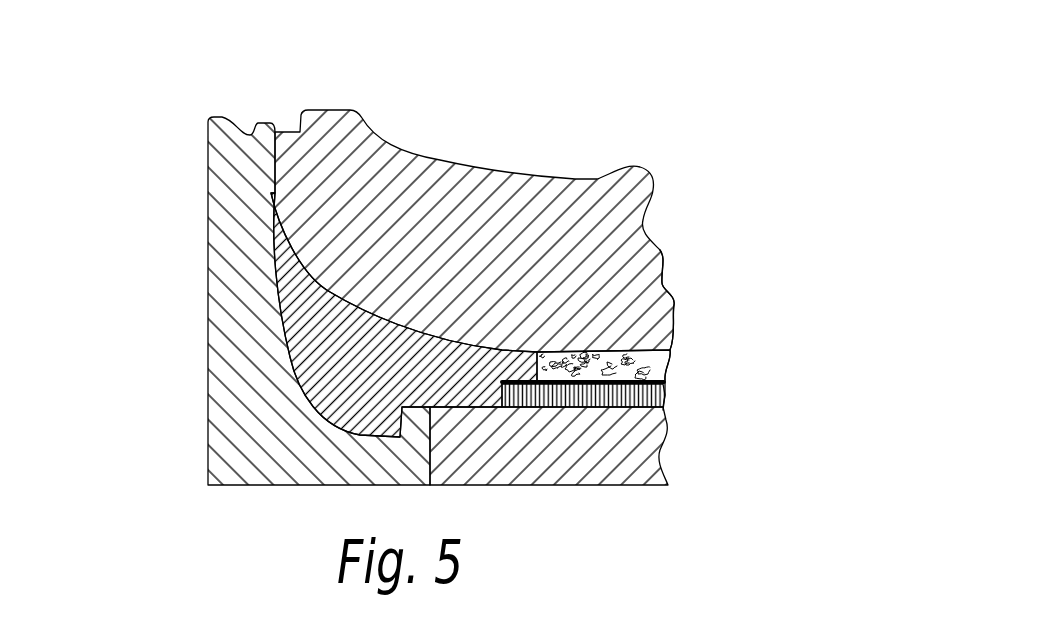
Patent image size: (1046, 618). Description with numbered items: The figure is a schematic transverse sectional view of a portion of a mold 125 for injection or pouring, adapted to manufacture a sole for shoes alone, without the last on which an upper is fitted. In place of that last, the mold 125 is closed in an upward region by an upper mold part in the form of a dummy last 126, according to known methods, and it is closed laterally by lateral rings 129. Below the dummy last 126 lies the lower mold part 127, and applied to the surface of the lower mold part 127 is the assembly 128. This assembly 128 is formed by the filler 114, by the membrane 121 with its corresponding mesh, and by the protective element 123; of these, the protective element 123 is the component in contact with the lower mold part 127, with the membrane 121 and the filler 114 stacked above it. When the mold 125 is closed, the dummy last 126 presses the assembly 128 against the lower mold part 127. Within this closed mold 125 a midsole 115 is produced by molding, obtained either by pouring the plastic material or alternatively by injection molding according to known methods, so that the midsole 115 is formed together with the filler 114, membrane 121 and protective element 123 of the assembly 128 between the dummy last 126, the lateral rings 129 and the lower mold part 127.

The mold 125 is at (185, 226).
The lateral rings 129 is at (247, 435).
The dummy last 126 is at (583, 198).
The midsole 115 is at (303, 363).
The lower mold part 127 is at (547, 473).
The protective element 123 is at (605, 400).
The membrane 121 is at (667, 293).
The assembly 128 is at (678, 407).
The filler 114 is at (667, 294).